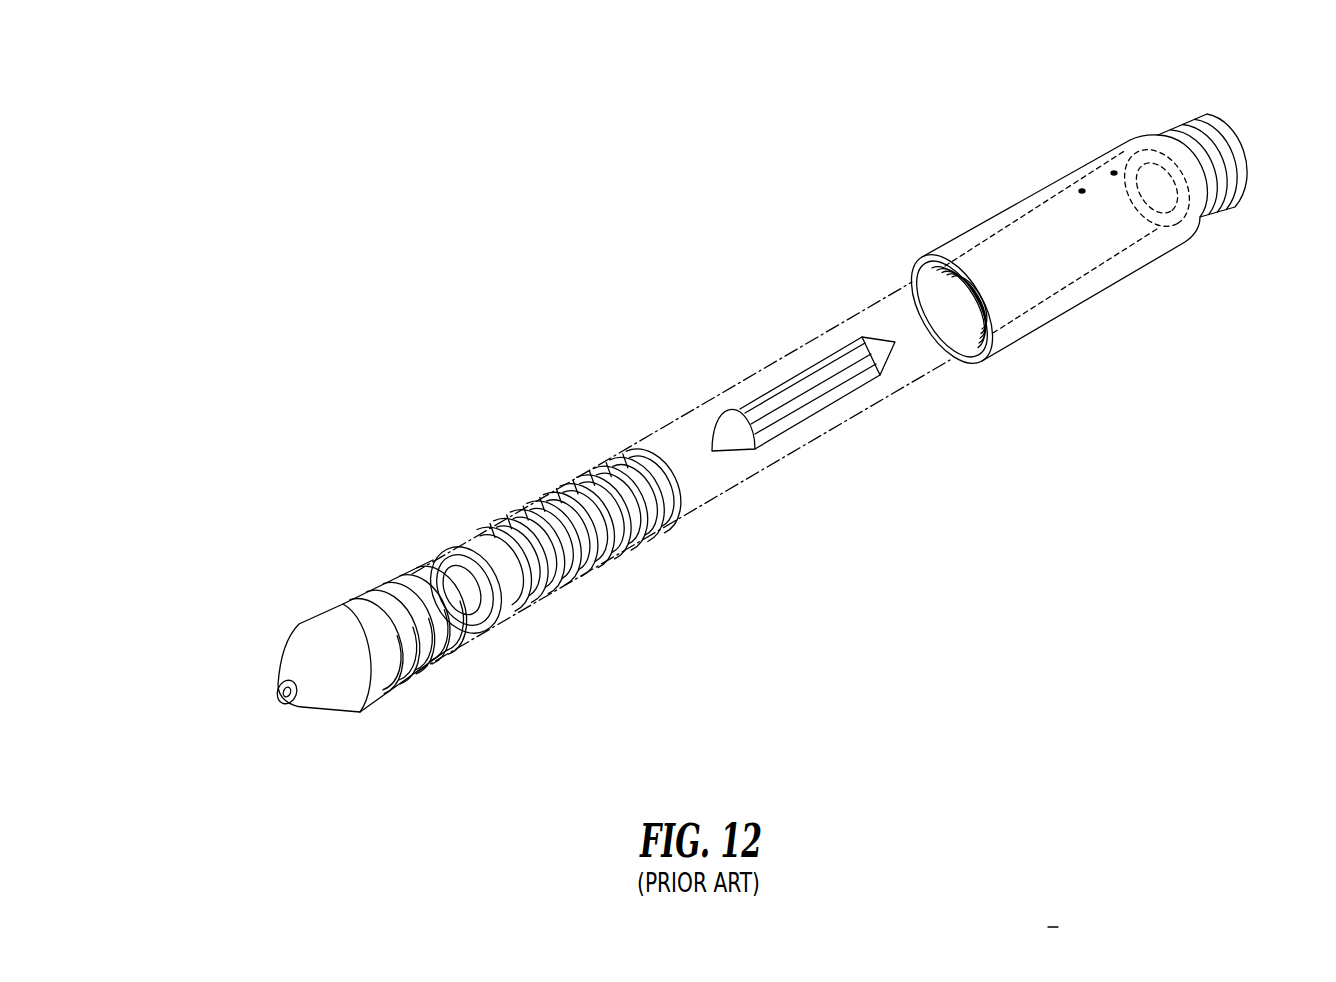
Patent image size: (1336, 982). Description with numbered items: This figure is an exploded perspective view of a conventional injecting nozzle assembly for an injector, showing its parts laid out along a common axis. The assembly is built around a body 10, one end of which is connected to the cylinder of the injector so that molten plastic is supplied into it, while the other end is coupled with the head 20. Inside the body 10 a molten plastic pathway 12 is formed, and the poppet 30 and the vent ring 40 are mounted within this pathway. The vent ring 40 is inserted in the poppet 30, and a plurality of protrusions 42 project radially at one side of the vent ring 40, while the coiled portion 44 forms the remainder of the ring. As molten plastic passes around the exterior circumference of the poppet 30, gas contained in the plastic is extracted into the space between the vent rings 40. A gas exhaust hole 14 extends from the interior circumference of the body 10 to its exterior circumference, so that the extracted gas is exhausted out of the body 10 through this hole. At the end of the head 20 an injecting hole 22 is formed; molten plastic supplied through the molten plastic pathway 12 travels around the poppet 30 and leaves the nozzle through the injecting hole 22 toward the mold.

The body 10 is at (1074, 242).
The molten plastic pathway 12 is at (1073, 260).
The gas exhaust hole 14 is at (1115, 172).
The head 20 is at (323, 697).
The injecting hole 22 is at (277, 695).
The poppet 30 is at (790, 393).
The vent ring 40 is at (536, 510).
The protrusions 42 is at (430, 573).
The spring coils 44 is at (541, 500).